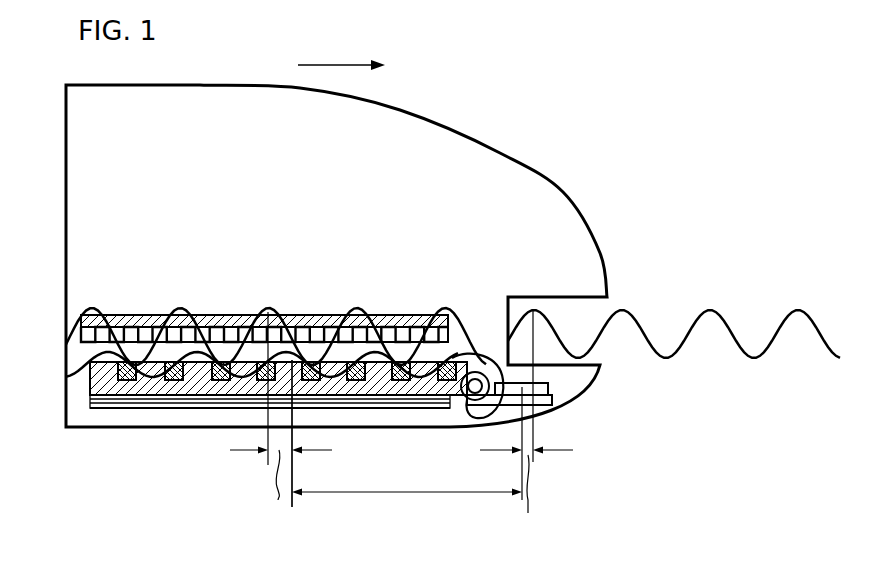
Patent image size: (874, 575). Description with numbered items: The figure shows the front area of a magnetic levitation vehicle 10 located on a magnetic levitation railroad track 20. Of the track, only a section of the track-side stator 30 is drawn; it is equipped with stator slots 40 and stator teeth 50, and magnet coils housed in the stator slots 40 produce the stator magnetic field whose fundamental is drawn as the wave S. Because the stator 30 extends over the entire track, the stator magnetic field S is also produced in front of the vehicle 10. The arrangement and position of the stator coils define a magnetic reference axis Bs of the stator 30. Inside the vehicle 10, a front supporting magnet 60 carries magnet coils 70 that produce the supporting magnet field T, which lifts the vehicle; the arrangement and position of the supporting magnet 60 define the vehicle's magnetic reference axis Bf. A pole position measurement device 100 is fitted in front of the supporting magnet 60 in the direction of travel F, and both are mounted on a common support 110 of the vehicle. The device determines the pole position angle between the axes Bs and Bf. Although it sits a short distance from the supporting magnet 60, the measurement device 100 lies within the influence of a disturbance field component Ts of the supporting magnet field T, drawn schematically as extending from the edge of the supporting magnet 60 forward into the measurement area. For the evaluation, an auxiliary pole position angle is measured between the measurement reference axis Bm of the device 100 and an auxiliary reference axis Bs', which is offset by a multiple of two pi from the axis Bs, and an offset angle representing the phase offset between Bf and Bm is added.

The magnetic levitation vehicle 10 is at (564, 192).
The magnetic levitation railroad track 20 is at (407, 315).
The track-side stator 30 is at (322, 315).
The stator slots 40 is at (95, 352).
The stator teeth 50 is at (78, 333).
The front supporting magnet 60 is at (90, 385).
The magnet coils 70 is at (130, 381).
The pole position measurement device 100 is at (548, 388).
The common support 110 is at (552, 400).
The stator magnetic field S is at (180, 307).
The direction of travel F is at (341, 51).
The supporting magnet field T is at (202, 381).
The disturbance field component Ts is at (480, 356).
The magnetic reference axis of the stator Bs is at (269, 409).
The auxiliary reference axis Bs' is at (544, 386).
The magnetic reference axis of the magnetic levitation vehicle Bf is at (292, 504).
The measurement reference axis Bm is at (521, 500).